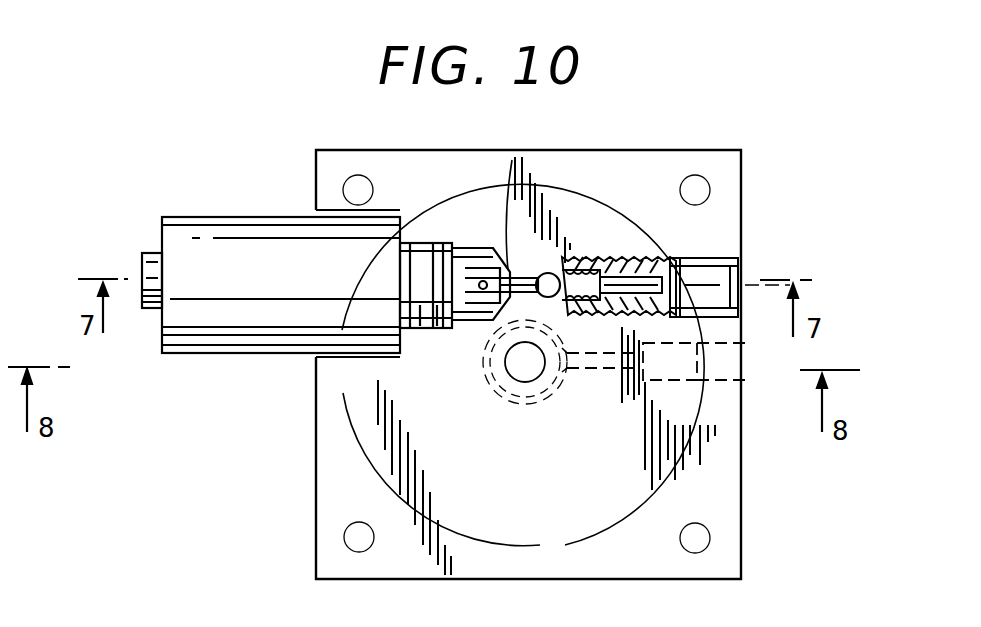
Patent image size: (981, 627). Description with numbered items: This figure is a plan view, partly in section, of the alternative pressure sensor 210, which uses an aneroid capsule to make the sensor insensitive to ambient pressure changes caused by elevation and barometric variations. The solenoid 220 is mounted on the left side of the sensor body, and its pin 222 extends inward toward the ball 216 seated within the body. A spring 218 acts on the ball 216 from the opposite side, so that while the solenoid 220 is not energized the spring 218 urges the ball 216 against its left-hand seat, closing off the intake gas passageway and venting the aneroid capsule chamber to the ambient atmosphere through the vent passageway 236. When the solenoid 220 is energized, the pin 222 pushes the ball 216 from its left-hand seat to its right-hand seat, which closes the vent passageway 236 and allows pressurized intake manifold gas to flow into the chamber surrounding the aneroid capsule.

The pressure sensor 210 is at (175, 543).
The ball 216 is at (557, 267).
The spring 218 is at (600, 258).
The solenoid 220 is at (231, 238).
The pin 222 is at (512, 160).
The vent passageway 236 is at (672, 308).